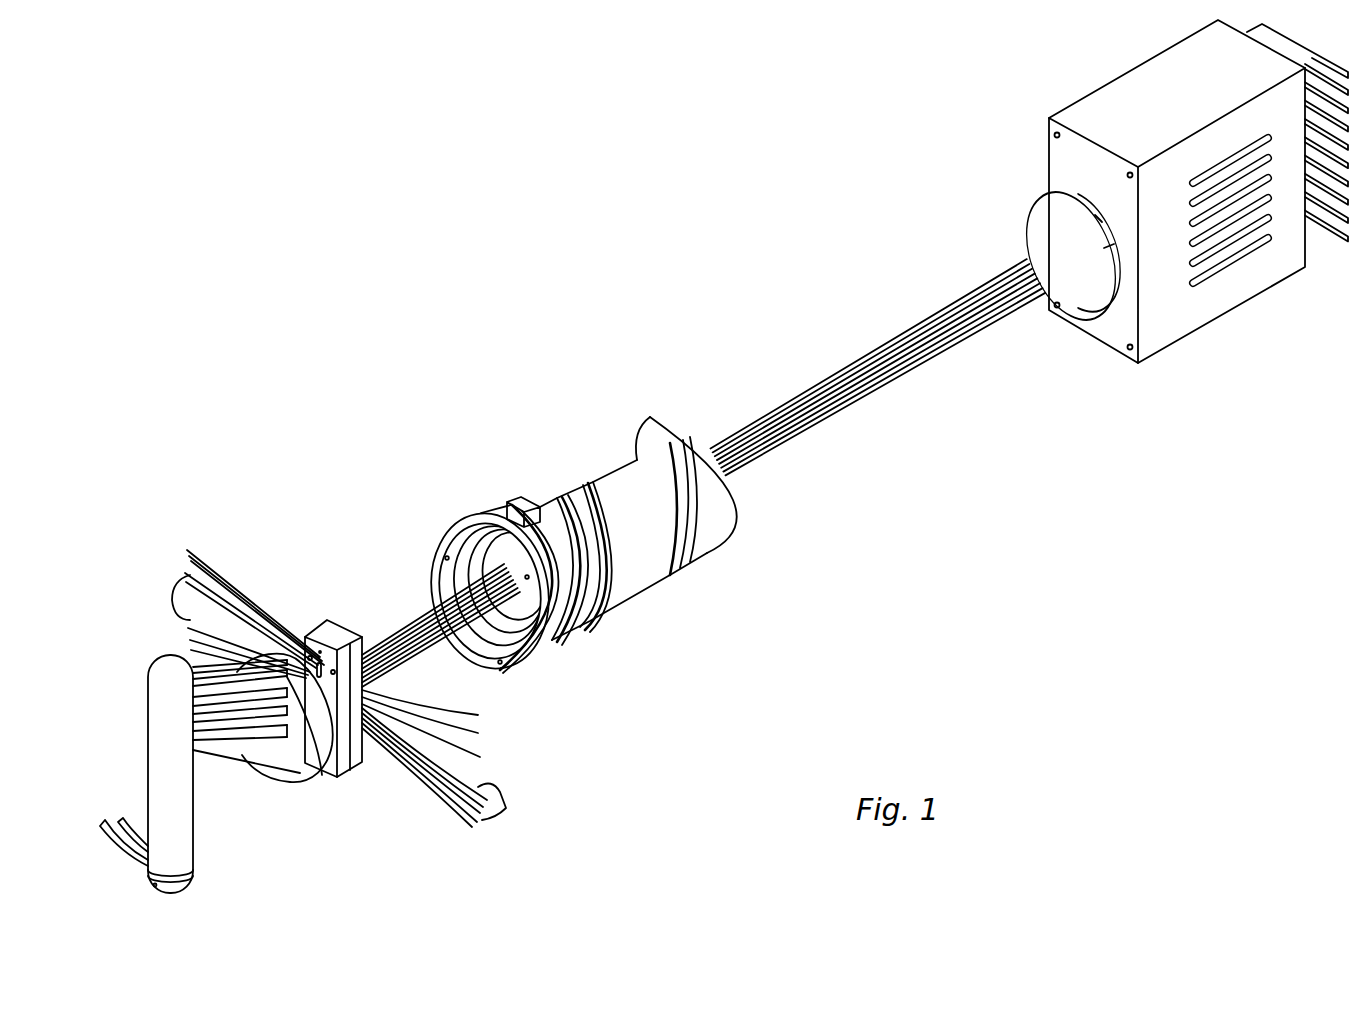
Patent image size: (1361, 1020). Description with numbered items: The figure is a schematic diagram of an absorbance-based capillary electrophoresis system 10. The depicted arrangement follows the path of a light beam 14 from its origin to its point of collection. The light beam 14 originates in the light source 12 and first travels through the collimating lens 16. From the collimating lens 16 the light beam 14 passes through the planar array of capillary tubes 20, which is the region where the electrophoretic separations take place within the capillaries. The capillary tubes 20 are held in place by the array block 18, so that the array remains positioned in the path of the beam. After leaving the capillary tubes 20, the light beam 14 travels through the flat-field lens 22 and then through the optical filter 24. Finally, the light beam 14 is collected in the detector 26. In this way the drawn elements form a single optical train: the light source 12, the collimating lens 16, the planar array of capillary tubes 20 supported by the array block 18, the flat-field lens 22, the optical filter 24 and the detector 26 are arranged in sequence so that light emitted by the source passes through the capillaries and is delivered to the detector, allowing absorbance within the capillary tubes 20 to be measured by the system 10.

The absorbance-based capillary electrophoresis system 10 is at (614, 189).
The light source 12 is at (155, 705).
The light beam 14 is at (417, 620).
The collimating lens 16 is at (311, 760).
The array block 18 is at (327, 618).
The planar array of capillary tubes 20 is at (181, 599).
The flat-field lens 22 is at (636, 578).
The optical filter 24 is at (1036, 240).
The detector 26 is at (1190, 316).